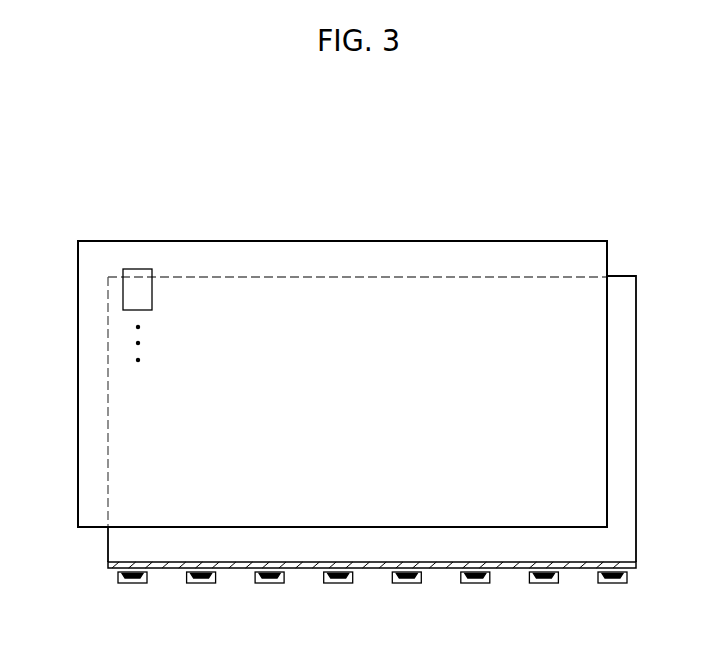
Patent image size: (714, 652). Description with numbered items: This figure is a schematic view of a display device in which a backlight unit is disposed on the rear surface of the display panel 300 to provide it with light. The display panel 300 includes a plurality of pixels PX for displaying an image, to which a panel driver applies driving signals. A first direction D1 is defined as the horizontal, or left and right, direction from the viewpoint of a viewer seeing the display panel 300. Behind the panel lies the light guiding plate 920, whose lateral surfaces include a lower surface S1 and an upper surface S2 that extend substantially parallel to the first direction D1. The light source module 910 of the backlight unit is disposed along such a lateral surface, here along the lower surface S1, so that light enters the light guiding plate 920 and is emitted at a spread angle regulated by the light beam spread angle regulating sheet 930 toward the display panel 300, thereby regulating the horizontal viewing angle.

The display panel 300 is at (551, 240).
The light guiding plate 920 is at (637, 402).
The light beam spread angle regulating sheet 930 is at (637, 563).
The light source module 910 is at (612, 584).
The pixels PX is at (137, 289).
The lower surface S1 is at (636, 575).
The upper surface S2 is at (638, 268).
The first direction D1 is at (62, 383).